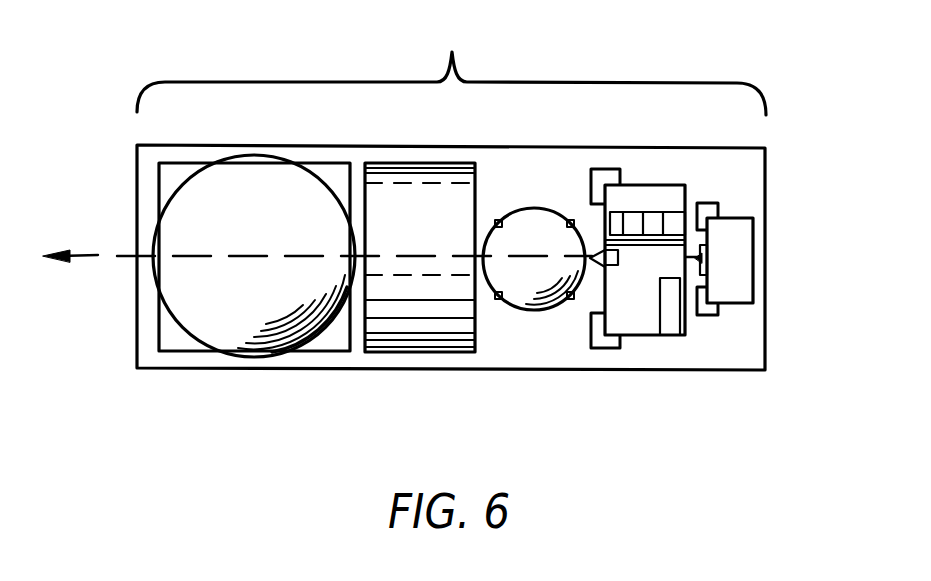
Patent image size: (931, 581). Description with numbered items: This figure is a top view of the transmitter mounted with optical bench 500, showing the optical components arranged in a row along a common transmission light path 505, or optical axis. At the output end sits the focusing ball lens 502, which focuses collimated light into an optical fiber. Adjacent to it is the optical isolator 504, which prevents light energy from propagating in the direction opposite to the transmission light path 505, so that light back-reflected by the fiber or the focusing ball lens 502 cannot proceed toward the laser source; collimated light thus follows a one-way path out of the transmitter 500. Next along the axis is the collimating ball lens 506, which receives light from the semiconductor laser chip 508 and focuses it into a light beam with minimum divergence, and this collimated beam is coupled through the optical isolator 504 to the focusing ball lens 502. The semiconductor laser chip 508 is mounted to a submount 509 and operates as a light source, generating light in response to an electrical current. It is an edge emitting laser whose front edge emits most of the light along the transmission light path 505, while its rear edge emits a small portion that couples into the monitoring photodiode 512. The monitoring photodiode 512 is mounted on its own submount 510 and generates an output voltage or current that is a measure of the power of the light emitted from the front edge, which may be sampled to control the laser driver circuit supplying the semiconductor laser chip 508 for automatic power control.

The transmitter mounted with optical bench 500 is at (451, 190).
The focusing ball lens 502 is at (209, 334).
The optical isolator 504 is at (403, 345).
The transmission light path 505 is at (98, 255).
The collimating ball lens 506 is at (530, 303).
The semiconductor laser chip 508 is at (607, 258).
The submount 509 is at (648, 335).
The submount 510 is at (743, 303).
The monitoring photodiode 512 is at (702, 258).